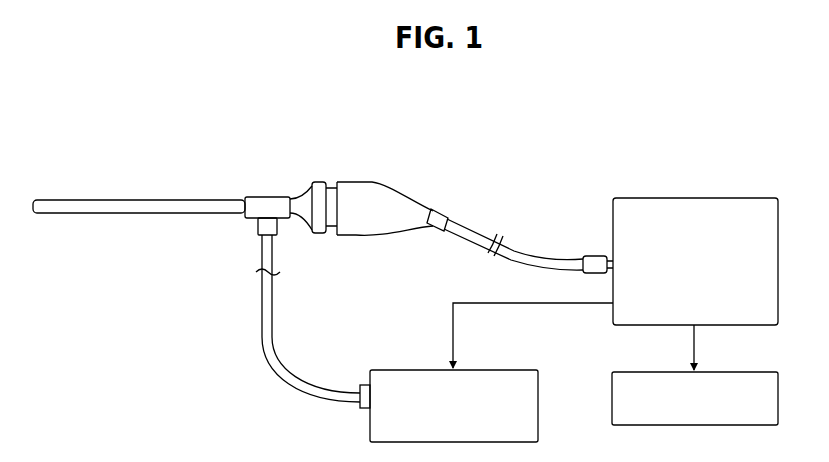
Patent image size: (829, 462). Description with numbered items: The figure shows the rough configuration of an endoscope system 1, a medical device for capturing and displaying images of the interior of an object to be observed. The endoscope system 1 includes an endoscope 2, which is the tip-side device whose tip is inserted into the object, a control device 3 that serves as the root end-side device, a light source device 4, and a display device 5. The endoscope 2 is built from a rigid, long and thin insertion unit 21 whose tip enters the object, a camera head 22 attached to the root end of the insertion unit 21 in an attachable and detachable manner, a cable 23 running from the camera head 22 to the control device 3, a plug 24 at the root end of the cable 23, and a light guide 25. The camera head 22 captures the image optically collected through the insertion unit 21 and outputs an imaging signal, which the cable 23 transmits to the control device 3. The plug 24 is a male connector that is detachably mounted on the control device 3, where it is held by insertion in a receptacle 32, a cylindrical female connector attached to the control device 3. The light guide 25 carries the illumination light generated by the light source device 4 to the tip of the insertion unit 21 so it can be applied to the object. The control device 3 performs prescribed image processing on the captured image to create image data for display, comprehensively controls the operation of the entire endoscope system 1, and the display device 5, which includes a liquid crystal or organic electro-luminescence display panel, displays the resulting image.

The endoscope system 1 is at (510, 133).
The endoscope 2 is at (406, 187).
The control device 3 is at (747, 198).
The light source device 4 is at (505, 370).
The display device 5 is at (745, 372).
The insertion unit 21 is at (173, 205).
The camera head 22 is at (362, 192).
The cable 23 is at (520, 250).
The plug 24 is at (588, 259).
The light guide 25 is at (273, 306).
The receptacle 32 is at (607, 273).